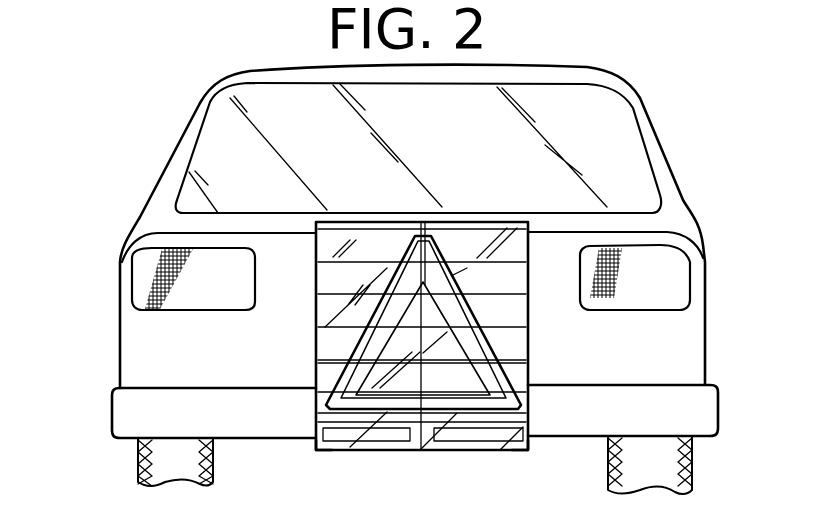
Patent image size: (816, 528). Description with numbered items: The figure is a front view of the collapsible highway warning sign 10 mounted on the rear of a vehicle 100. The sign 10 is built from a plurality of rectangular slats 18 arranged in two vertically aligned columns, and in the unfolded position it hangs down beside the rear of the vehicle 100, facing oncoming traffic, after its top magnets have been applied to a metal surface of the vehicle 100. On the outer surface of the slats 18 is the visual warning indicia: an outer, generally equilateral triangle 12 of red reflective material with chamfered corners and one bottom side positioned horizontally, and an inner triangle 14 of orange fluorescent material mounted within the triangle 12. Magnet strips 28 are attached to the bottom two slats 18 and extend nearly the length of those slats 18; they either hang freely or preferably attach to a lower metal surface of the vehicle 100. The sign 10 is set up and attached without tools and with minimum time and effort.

The vehicle 100 is at (110, 313).
The sign 10 is at (413, 359).
The outer triangle 12 is at (467, 309).
The inner triangle 14 is at (498, 372).
The slats 18 is at (317, 451).
The magnet strips 28 is at (453, 442).